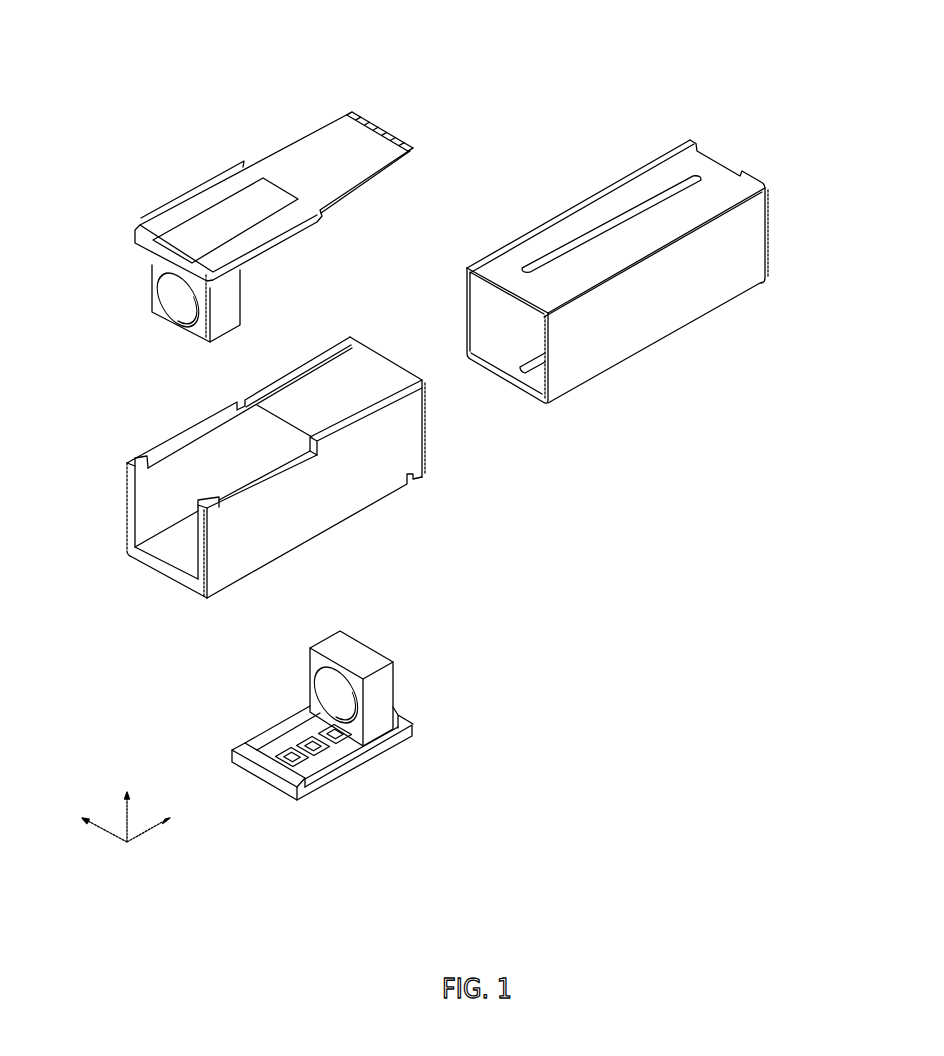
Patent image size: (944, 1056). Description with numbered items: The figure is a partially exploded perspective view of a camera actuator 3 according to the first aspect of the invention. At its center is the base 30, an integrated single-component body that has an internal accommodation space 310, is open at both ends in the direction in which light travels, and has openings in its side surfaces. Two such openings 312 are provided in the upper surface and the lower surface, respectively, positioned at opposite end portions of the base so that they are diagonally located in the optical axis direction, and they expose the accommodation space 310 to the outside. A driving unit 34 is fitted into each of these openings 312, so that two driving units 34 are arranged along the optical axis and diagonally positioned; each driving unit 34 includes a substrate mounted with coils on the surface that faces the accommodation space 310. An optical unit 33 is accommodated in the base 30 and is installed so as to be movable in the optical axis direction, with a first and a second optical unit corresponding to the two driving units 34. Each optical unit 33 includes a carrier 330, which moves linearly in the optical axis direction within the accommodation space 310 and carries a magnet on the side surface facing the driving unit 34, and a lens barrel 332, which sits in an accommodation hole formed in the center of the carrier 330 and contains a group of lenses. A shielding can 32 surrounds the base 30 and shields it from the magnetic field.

The camera actuator 3 is at (413, 61).
The base 30 is at (278, 477).
The internal accommodation space 310 is at (179, 549).
The opening 312 is at (211, 447).
The shielding can 32 is at (610, 353).
The optical unit 33 is at (210, 505).
The carrier 330 is at (191, 330).
The lens barrel 332 is at (165, 289).
The driving unit 34 is at (129, 232).